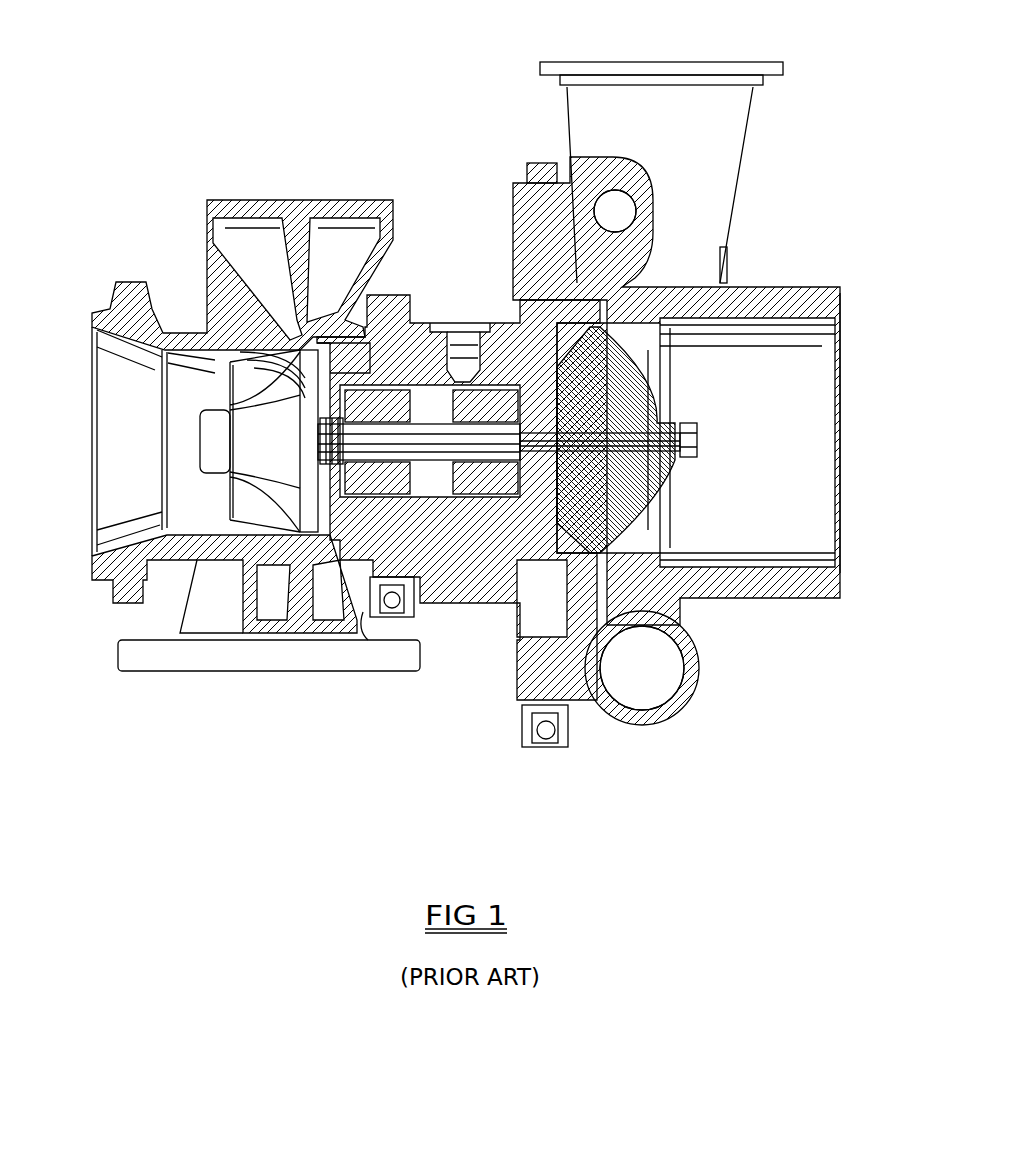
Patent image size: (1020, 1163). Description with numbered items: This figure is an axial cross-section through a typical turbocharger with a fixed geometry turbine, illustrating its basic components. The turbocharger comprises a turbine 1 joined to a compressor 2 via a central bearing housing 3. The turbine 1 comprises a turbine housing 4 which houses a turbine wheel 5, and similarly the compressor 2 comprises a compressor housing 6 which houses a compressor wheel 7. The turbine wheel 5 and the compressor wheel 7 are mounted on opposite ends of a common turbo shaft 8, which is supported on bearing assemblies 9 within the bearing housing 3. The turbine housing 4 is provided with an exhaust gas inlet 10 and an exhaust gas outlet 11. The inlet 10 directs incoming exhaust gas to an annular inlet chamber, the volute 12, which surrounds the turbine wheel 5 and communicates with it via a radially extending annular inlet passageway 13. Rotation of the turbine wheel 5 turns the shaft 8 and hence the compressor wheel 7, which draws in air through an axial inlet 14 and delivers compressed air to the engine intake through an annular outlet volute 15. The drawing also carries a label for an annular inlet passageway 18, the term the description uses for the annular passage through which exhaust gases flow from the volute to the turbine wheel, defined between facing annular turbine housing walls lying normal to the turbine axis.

The turbine 1 is at (140, 262).
The compressor 2 is at (842, 332).
The central bearing housing 3 is at (436, 287).
The turbine housing 4 is at (222, 210).
The turbine wheel 5 is at (245, 385).
The compressor housing 6 is at (758, 292).
The compressor wheel 7 is at (637, 510).
The common turbo shaft 8 is at (673, 417).
The bearing assemblies 9 is at (388, 483).
The exhaust gas inlet 10 is at (372, 663).
The exhaust gas outlet 11 is at (163, 477).
The volute 12 is at (271, 278).
The annular inlet passageway 13 is at (325, 290).
The axial inlet 14 is at (797, 500).
The annular outlet volute 15 is at (623, 497).
The annular inlet passageway 18 is at (524, 262).